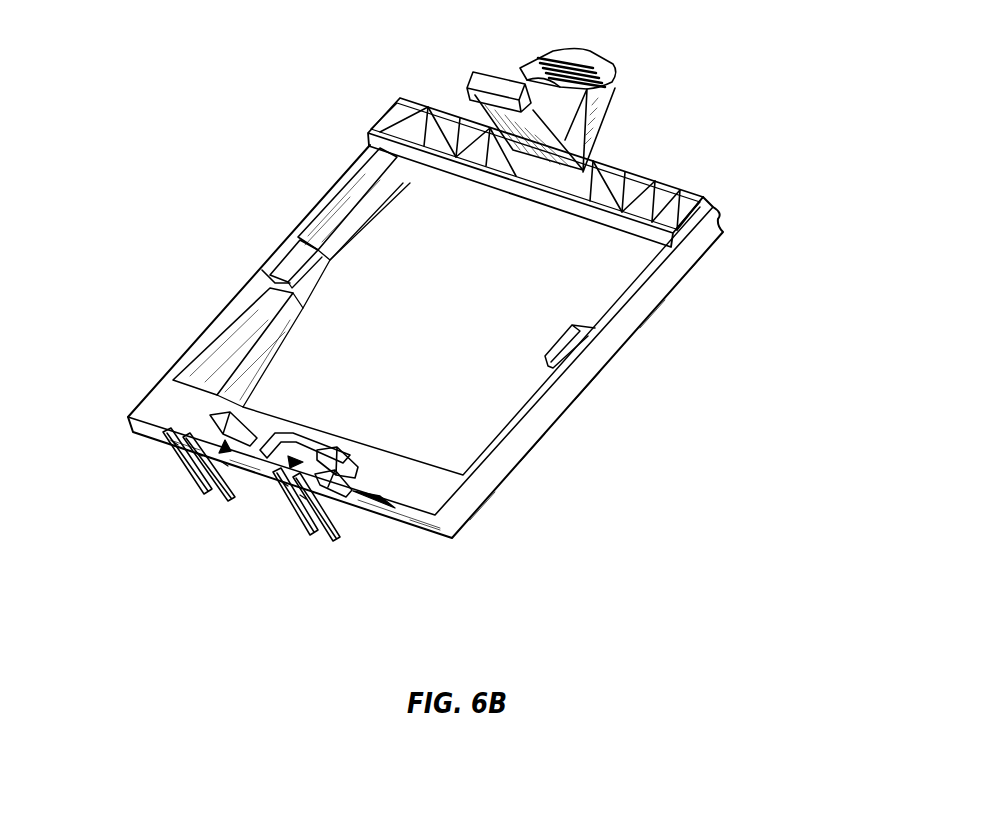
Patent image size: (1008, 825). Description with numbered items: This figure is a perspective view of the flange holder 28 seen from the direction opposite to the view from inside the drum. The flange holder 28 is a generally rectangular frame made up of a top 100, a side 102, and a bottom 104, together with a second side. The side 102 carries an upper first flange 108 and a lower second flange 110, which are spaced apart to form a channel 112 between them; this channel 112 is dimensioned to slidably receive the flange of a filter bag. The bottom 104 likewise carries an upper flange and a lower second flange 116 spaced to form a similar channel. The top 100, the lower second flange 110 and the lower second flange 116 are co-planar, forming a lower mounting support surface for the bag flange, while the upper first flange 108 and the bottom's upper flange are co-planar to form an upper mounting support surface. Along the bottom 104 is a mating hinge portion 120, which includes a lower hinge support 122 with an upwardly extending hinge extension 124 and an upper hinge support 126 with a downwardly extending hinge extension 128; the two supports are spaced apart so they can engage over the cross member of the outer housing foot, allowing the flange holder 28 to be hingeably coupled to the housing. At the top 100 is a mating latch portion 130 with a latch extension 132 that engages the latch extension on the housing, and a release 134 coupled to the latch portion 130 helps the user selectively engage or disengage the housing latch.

The flange holder 28 is at (731, 323).
The top 100 is at (560, 212).
The side 102 is at (607, 362).
The bottom 104 is at (398, 537).
The upper first flange 108 is at (363, 227).
The lower second flange 110 is at (305, 268).
The channel 112 is at (277, 285).
The lower second flange 116 is at (293, 422).
The mating hinge portion 120 is at (245, 492).
The lower hinge support 122 is at (318, 528).
The hinge extension 124 is at (348, 537).
The upper hinge support 126 is at (333, 458).
The hinge extension 128 is at (345, 466).
The mating latch portion 130 is at (538, 136).
The latch extension 132 is at (467, 88).
The release 134 is at (590, 56).